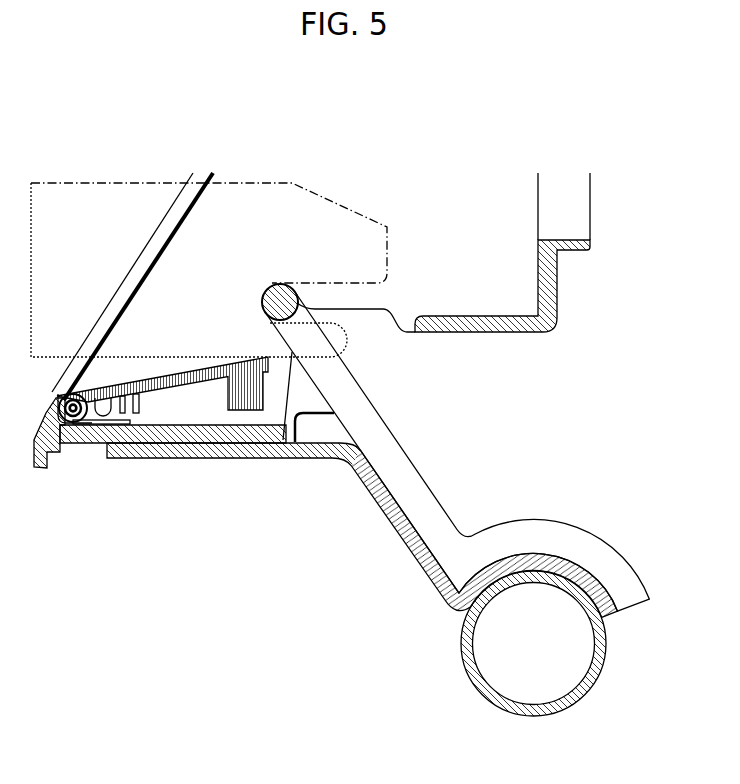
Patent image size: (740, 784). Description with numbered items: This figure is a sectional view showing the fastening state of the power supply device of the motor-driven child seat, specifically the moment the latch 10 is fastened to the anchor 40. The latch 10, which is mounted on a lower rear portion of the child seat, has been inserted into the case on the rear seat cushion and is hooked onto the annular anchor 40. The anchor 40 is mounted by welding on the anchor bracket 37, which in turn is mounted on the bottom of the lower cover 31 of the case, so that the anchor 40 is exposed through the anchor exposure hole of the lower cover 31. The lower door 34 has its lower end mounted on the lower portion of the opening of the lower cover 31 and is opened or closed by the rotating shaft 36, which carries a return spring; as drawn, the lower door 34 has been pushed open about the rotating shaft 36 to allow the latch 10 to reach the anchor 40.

The latch 10 is at (293, 182).
The lower cover 31 is at (566, 286).
The lower door 34 is at (168, 383).
The rotating shaft 36 is at (72, 423).
The anchor bracket 37 is at (255, 463).
The anchor 40 is at (274, 286).